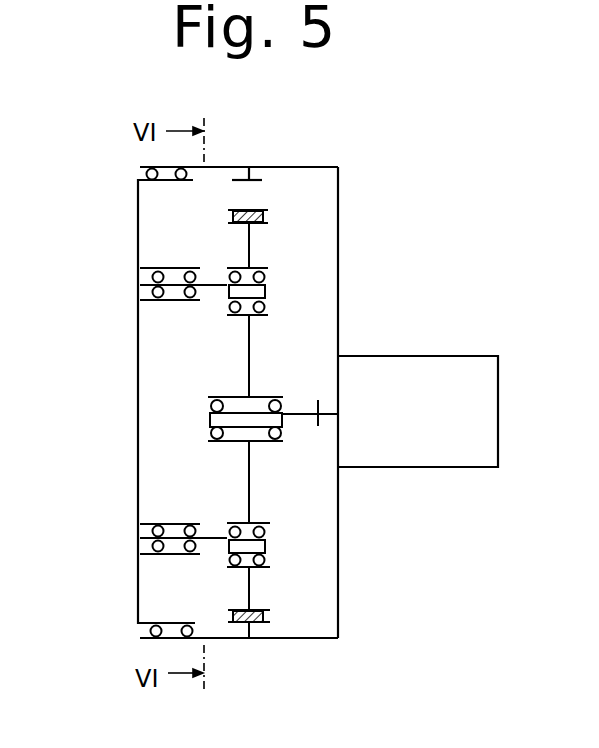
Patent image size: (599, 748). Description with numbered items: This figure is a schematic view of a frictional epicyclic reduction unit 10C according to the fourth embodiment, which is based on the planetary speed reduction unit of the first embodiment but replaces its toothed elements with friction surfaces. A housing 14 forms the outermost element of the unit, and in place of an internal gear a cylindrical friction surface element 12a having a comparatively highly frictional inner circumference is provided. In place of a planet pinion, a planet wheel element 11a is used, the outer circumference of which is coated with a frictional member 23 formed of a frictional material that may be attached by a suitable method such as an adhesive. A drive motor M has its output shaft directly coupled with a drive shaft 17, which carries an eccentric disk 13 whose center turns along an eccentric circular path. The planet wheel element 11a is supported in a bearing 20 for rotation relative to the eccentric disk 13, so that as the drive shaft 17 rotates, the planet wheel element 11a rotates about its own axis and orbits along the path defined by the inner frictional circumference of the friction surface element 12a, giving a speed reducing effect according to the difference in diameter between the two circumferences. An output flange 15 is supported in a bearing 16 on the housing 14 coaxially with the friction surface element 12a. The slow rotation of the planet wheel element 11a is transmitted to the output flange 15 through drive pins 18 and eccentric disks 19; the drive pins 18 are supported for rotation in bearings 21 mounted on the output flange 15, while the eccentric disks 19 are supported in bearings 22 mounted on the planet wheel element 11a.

The frictional epicyclic reduction unit 10C is at (352, 232).
The planet wheel element 11a is at (249, 243).
The cylindrical friction surface element 12a is at (264, 178).
The eccentric disk 13 is at (208, 414).
The housing 14 is at (318, 638).
The output flange 15 is at (137, 366).
The bearing 16 is at (138, 173).
The drive shaft 17 is at (301, 416).
The drive pins 18 is at (211, 270).
The eccentric disks 19 is at (267, 295).
The bearing 20 is at (263, 443).
The bearings 21 is at (138, 292).
The bearings 22 is at (266, 278).
The frictional member 23 is at (264, 215).
The drive motor M is at (468, 356).